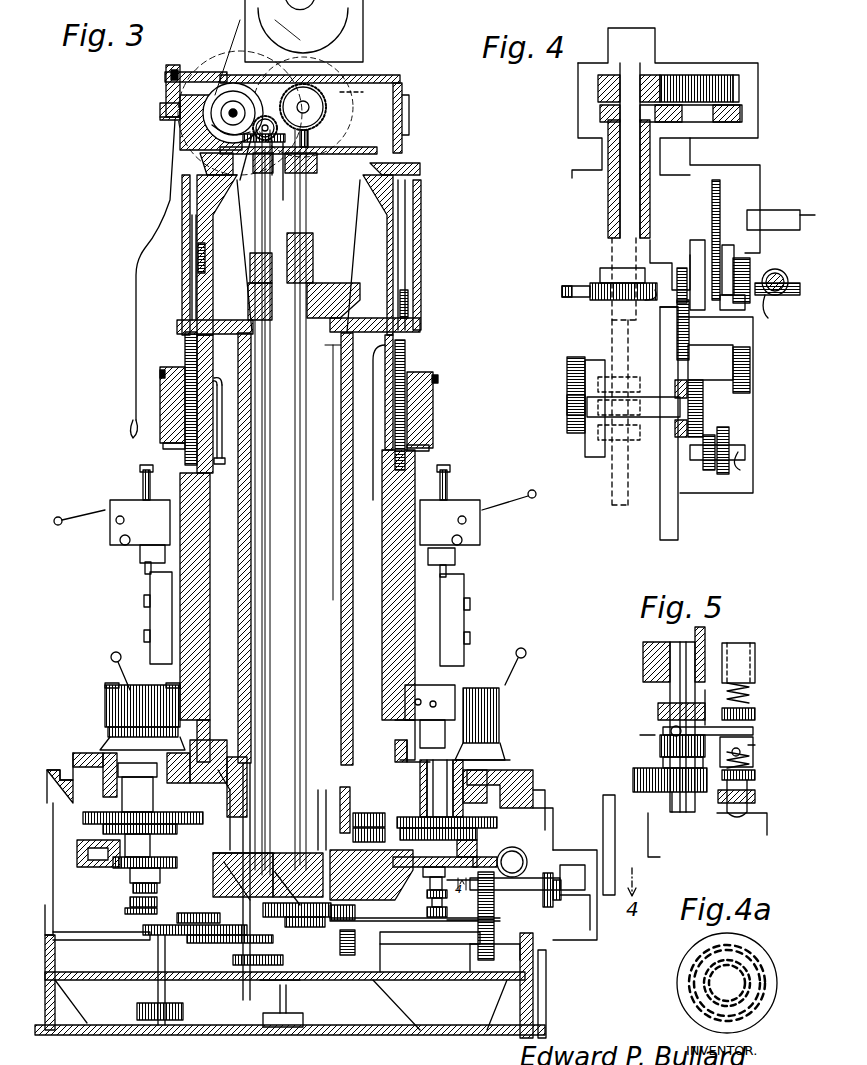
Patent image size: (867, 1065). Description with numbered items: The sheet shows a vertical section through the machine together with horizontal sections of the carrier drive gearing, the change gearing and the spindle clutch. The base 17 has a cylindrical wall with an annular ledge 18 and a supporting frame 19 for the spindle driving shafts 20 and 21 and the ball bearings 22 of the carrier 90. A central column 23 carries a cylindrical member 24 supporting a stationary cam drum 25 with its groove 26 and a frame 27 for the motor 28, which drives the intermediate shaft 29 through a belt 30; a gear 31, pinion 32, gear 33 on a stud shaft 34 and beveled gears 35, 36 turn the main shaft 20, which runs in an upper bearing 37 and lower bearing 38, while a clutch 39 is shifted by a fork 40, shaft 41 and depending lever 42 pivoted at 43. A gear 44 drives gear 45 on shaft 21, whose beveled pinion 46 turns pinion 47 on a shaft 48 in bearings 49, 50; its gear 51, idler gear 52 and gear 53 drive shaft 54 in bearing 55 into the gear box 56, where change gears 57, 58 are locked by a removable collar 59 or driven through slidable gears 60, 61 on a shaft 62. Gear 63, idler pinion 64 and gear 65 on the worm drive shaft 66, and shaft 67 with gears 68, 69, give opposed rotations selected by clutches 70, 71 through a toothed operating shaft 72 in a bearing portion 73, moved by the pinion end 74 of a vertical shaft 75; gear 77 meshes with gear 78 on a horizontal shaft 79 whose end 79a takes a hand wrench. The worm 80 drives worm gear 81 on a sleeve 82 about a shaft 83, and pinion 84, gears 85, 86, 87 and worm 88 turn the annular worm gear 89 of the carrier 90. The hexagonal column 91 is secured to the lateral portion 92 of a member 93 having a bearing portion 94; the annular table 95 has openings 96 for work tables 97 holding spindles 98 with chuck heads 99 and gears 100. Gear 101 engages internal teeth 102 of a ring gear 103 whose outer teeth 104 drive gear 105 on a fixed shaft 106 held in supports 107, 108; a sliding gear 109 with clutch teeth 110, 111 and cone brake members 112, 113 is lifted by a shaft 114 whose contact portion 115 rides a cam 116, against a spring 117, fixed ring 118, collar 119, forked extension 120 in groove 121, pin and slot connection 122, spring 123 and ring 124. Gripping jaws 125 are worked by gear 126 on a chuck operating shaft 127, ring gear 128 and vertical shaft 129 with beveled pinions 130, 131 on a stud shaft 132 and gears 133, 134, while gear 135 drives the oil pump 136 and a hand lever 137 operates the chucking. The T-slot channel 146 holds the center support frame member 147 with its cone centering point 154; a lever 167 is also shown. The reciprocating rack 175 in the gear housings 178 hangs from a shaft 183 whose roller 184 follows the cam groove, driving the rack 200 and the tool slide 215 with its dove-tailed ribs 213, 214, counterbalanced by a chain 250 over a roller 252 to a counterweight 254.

In FIG. 3, the base 17 is at (533, 965).
In FIG. 3, the annular ledge 18 is at (515, 780).
In FIG. 3, the supporting frame 19 is at (334, 864).
In FIG. 3, the main driving shaft 20 is at (280, 380).
In FIG. 3, the short vertical shaft 21 is at (305, 500).
In FIG. 3, the ball bearings 22 is at (130, 905).
In FIG. 3, the central cylindrical column 23 is at (341, 648).
In FIG. 3, the cylindrical member 24 is at (421, 222).
In FIG. 3, the stationary cam drum 25 is at (182, 295).
In FIG. 3, the groove 26 is at (195, 235).
In FIG. 3, the super-structure or frame 27 is at (400, 78).
In FIG. 3, the driving motor 28 is at (372, 22).
In FIG. 3, the intermediate shaft 29 is at (228, 120).
In FIG. 3, the belt 30 is at (303, 26).
In FIG. 3, the gear 31 is at (205, 115).
In FIG. 3, the pinion 32 is at (217, 56).
In FIG. 3, the gear 33 is at (361, 92).
In FIG. 3, the stud shaft 34 is at (325, 112).
In FIG. 3, the beveled gear 35 is at (308, 118).
In FIG. 3, the beveled gear 36 is at (320, 163).
In FIG. 3, the upper bearing 37 is at (317, 178).
In FIG. 3, the lower bearing 38 is at (287, 843).
In FIG. 3, the clutch 39 is at (166, 92).
In FIG. 3, the fork 40 is at (160, 110).
In FIG. 3, the shaft 41 is at (195, 72).
In FIG. 3, the depending lever 42 is at (136, 255).
In FIG. 3, the pivot 43 is at (170, 118).
In FIG. 3, the gear 44 is at (297, 922).
In FIG. 3, the gear 45 is at (349, 919).
In FIG. 3, the beveled pinion 46 is at (305, 937).
In FIG. 3, the beveled pinion 47 is at (190, 965).
In FIG. 3, the shaft 48 is at (420, 944).
In FIG. 3, the bearing 49 is at (355, 945).
In FIG. 3, the bearing 50 is at (490, 960).
In FIG. 3, the gear 51 is at (482, 955).
In FIG. 3, the idler gear 52 is at (462, 921).
In FIG. 4, the idler gear 52 is at (567, 370).
In FIG. 3, the gear 53 is at (462, 893).
In FIG. 4, the gear 53 is at (567, 410).
In FIG. 3, the shaft 54 is at (530, 893).
In FIG. 4, the shaft 54 is at (650, 417).
In FIG. 4, the bearing 55 is at (592, 457).
In FIG. 3, the gear box 56 is at (590, 935).
In FIG. 4, the gear box 56 is at (753, 405).
In FIG. 3, the change gear 57 is at (553, 878).
In FIG. 4, the change gear 57 is at (672, 440).
In FIG. 3, the change gear 58 is at (585, 875).
In FIG. 4, the change gear 58 is at (703, 405).
In FIG. 4, the removable collar 59 is at (700, 390).
In FIG. 4A, the removable collar 59 is at (677, 985).
In FIG. 4, the intermediate change speed gear 60 is at (708, 470).
In FIG. 4, the intermediate change speed gear 61 is at (723, 474).
In FIG. 4, the shaft 62 is at (740, 470).
In FIG. 4, the gear 63 is at (677, 355).
In FIG. 4, the idler pinion 64 is at (672, 310).
In FIG. 4, the gear 65 is at (677, 280).
In FIG. 4, the worm drive shaft 66 is at (645, 300).
In FIG. 4, the shaft 67 is at (715, 365).
In FIG. 4, the gear 68 is at (750, 362).
In FIG. 4, the gear 69 is at (750, 265).
In FIG. 4, the shiftable clutch 70 is at (692, 261).
In FIG. 4, the shiftable clutch 71 is at (745, 298).
In FIG. 4, the toothed operating shaft 72 is at (790, 296).
In FIG. 4, the bearing portion 73 is at (779, 316).
In FIG. 4, the lower pinion end 74 is at (784, 282).
In FIG. 3, the vertical shaft 75 is at (603, 800).
In FIG. 4, the vertical shaft 75 is at (786, 272).
In FIG. 4, the gear 77 is at (728, 245).
In FIG. 4, the gear 78 is at (716, 180).
In FIG. 4, the horizontal shaft 79 is at (775, 212).
In FIG. 4, the projecting end 79a is at (809, 207).
In FIG. 4, the worm 80 is at (598, 268).
In FIG. 4, the worm gear 81 is at (585, 286).
In FIG. 4, the sleeve 82 is at (608, 200).
In FIG. 4, the shaft 83 is at (623, 152).
In FIG. 4, the pinion 84 is at (600, 112).
In FIG. 4, the gear 85 is at (742, 112).
In FIG. 4, the gear 86 is at (733, 88).
In FIG. 4, the gear 87 is at (598, 90).
In FIG. 3, the worm 88 is at (545, 878).
In FIG. 4, the worm 88 is at (605, 475).
In FIG. 3, the annular worm gear 89 is at (523, 855).
In FIG. 3, the carrier 90 is at (420, 840).
In FIG. 3, the vertical column 91 is at (210, 640).
In FIG. 3, the lateral portion 92 is at (420, 326).
In FIG. 3, the member 93 is at (421, 287).
In FIG. 3, the annular bearing portion 94 is at (326, 472).
In FIG. 3, the annular table 95 is at (490, 752).
In FIG. 3, the bearing openings 96 is at (488, 765).
In FIG. 3, the work supporting table 97 is at (490, 735).
In FIG. 3, the central spindle 98 is at (497, 855).
In FIG. 3, the chuck head 99 is at (512, 688).
In FIG. 3, the gear 100 is at (500, 800).
In FIG. 3, the gear 101 is at (320, 790).
In FIG. 3, the internal teeth 102 is at (240, 800).
In FIG. 3, the ring gear 103 is at (240, 800).
In FIG. 3, the outer teeth 104 is at (232, 745).
In FIG. 3, the gear 105 is at (122, 870).
In FIG. 5, the gear 105 is at (672, 812).
In FIG. 3, the fixed shaft 106 is at (133, 888).
In FIG. 5, the fixed shaft 106 is at (680, 680).
In FIG. 3, the support 107 is at (380, 760).
In FIG. 5, the support 107 is at (643, 652).
In FIG. 3, the support 108 is at (160, 925).
In FIG. 5, the support 108 is at (700, 812).
In FIG. 3, the gear 109 is at (234, 796).
In FIG. 5, the gear 109 is at (660, 745).
In FIG. 5, the beveled clutch teeth 110 is at (663, 763).
In FIG. 5, the beveled clutch teeth 111 is at (645, 792).
In FIG. 5, the cone brake member 112 is at (663, 731).
In FIG. 5, the cone brake member 113 is at (658, 710).
In FIG. 5, the vertically movable shaft 114 is at (747, 790).
In FIG. 5, the contact portion 115 is at (760, 723).
In FIG. 3, the stationary cam 116 is at (415, 903).
In FIG. 5, the stationary cam 116 is at (720, 813).
In FIG. 5, the spring 117 is at (749, 700).
In FIG. 5, the fixed ring 118 is at (755, 715).
In FIG. 5, the collar 119 is at (753, 745).
In FIG. 5, the forked extension 120 is at (710, 705).
In FIG. 5, the annular groove 121 is at (612, 746).
In FIG. 5, the pin and slot connection 122 is at (749, 760).
In FIG. 5, the spring 123 is at (777, 748).
In FIG. 5, the fixed ring 124 is at (755, 775).
In FIG. 3, the work gripping jaws 125 is at (440, 690).
In FIG. 3, the gear 126 is at (278, 916).
In FIG. 3, the chuck operating shaft 127 is at (445, 720).
In FIG. 3, the ring gear 128 is at (130, 915).
In FIG. 3, the vertical shaft 129 is at (225, 460).
In FIG. 3, the beveled pinion 130 is at (249, 165).
In FIG. 3, the beveled pinion 131 is at (262, 112).
In FIG. 3, the stud shaft 132 is at (279, 167).
In FIG. 3, the gear 133 is at (281, 177).
In FIG. 3, the gear 134 is at (220, 135).
In FIG. 3, the gear 135 is at (245, 975).
In FIG. 3, the oil pump 136 is at (300, 1020).
In FIG. 3, the hand lever 137 is at (112, 660).
In FIG. 3, the T-slot channel 146 is at (143, 478).
In FIG. 3, the center support frame member 147 is at (140, 548).
In FIG. 3, the cone centering point 154 is at (145, 570).
In FIG. 3, the lever 167 is at (90, 512).
In FIG. 3, the vertically reciprocating rack 175 is at (185, 342).
In FIG. 3, the gear housing 178 is at (160, 400).
In FIG. 3, the shaft 183 is at (183, 318).
In FIG. 3, the roller 184 is at (198, 255).
In FIG. 3, the rack 200 is at (180, 675).
In FIG. 3, the dove-tailed rib 213 is at (150, 590).
In FIG. 3, the dove-tailed rib 214 is at (150, 640).
In FIG. 3, the tool slide 215 is at (150, 622).
In FIG. 3, the chain 250 is at (213, 380).
In FIG. 3, the roller 252 is at (160, 372).
In FIG. 3, the counterweight 254 is at (163, 455).